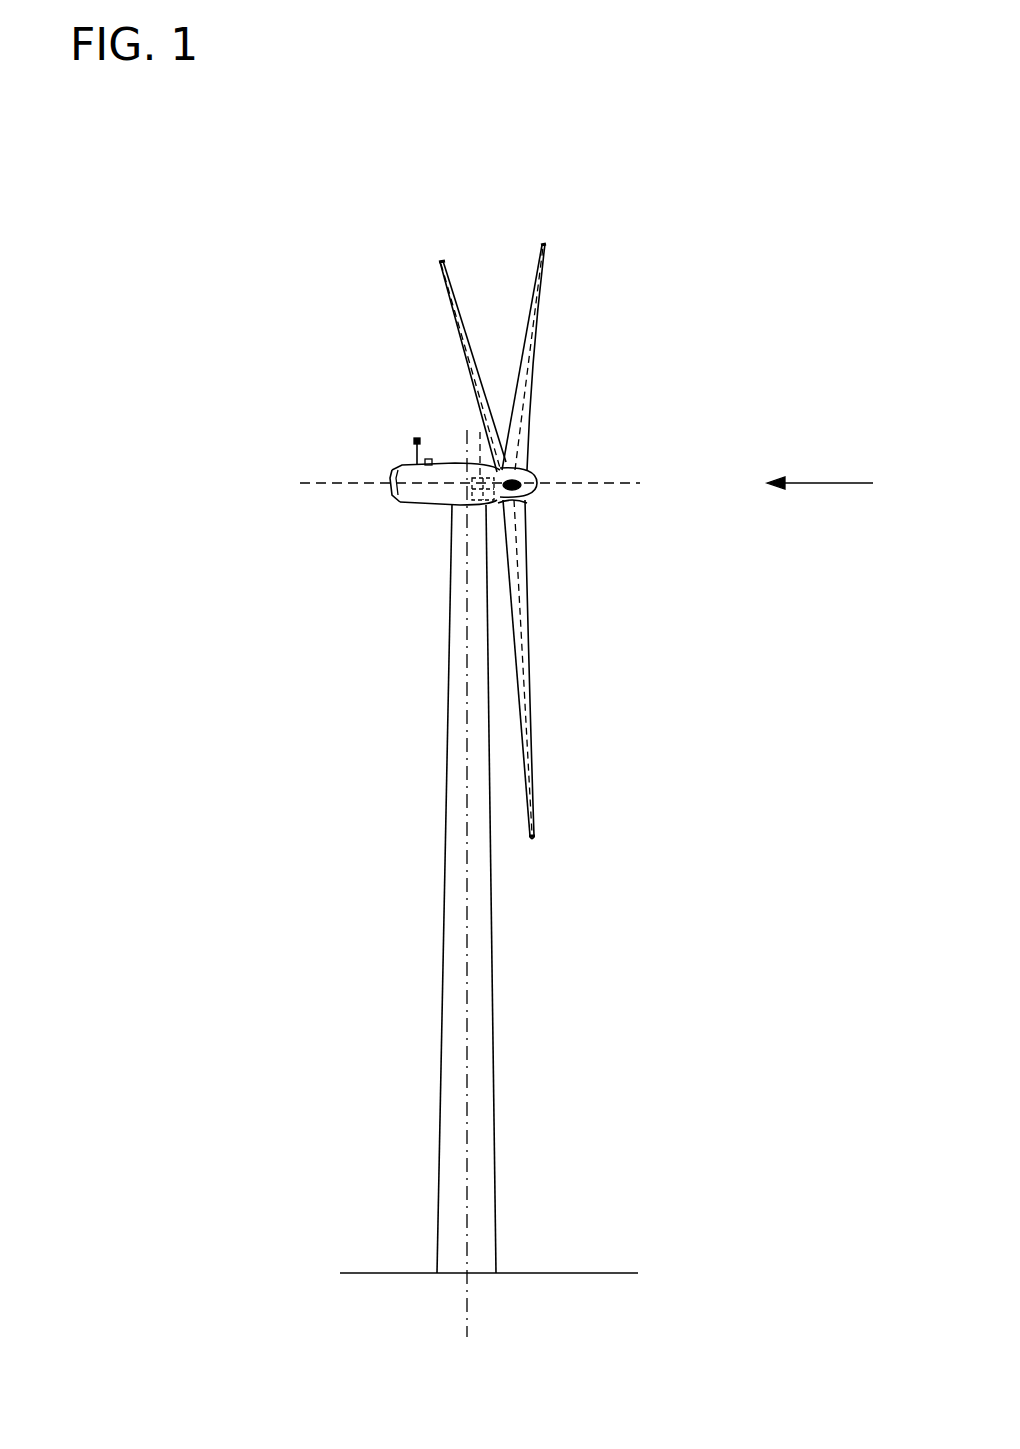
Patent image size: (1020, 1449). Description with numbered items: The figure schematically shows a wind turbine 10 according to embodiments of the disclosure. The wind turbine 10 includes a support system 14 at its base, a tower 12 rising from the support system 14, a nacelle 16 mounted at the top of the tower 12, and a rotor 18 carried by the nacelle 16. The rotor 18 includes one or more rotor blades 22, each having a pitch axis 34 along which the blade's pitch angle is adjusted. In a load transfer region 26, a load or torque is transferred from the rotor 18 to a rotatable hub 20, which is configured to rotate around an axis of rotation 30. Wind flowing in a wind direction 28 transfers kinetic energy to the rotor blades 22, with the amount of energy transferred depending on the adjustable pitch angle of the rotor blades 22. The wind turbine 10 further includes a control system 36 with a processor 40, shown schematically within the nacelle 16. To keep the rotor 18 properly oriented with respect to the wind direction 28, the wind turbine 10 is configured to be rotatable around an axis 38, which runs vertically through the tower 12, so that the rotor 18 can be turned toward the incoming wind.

The wind turbine 10 is at (228, 272).
The tower 12 is at (459, 883).
The support system 14 is at (397, 1273).
The nacelle 16 is at (430, 483).
The rotor 18 is at (525, 533).
The rotatable hub 20 is at (533, 477).
The rotor blade 22 is at (495, 533).
The load transfer region 26 is at (520, 500).
The wind direction 28 is at (840, 483).
The axis of rotation 30 is at (602, 484).
The pitch axis 34 is at (438, 264).
The control system 36 is at (478, 500).
The axis 38 is at (467, 931).
The processor 40 is at (480, 432).